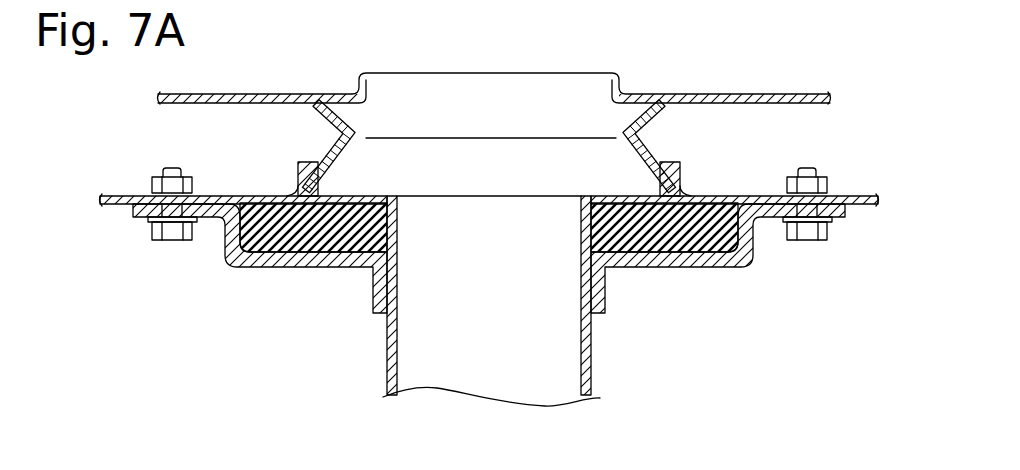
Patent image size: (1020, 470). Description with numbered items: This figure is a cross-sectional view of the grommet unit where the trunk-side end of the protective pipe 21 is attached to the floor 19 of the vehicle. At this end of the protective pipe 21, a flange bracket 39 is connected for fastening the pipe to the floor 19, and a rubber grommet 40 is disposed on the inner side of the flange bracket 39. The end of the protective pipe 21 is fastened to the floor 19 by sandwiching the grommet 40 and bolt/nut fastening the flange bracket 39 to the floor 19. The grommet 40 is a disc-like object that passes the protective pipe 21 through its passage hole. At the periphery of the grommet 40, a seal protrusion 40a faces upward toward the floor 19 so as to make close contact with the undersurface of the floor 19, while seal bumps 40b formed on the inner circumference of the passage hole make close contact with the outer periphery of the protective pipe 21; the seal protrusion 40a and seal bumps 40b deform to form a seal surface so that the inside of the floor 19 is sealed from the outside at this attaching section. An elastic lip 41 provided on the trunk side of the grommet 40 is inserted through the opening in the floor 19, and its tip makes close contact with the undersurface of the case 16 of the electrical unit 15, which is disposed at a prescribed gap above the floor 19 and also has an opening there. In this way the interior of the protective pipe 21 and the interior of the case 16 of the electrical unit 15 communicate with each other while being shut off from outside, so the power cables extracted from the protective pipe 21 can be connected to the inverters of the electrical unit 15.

The case 16 is at (527, 114).
The electrical unit 15 is at (748, 104).
The floor 19 is at (125, 194).
The protective pipe 21 is at (384, 383).
The flange bracket 39 is at (293, 268).
The grommet 40 is at (237, 264).
The seal protrusion 40a is at (223, 194).
The seal bumps 40b is at (393, 231).
The elastic lip 41 is at (326, 119).